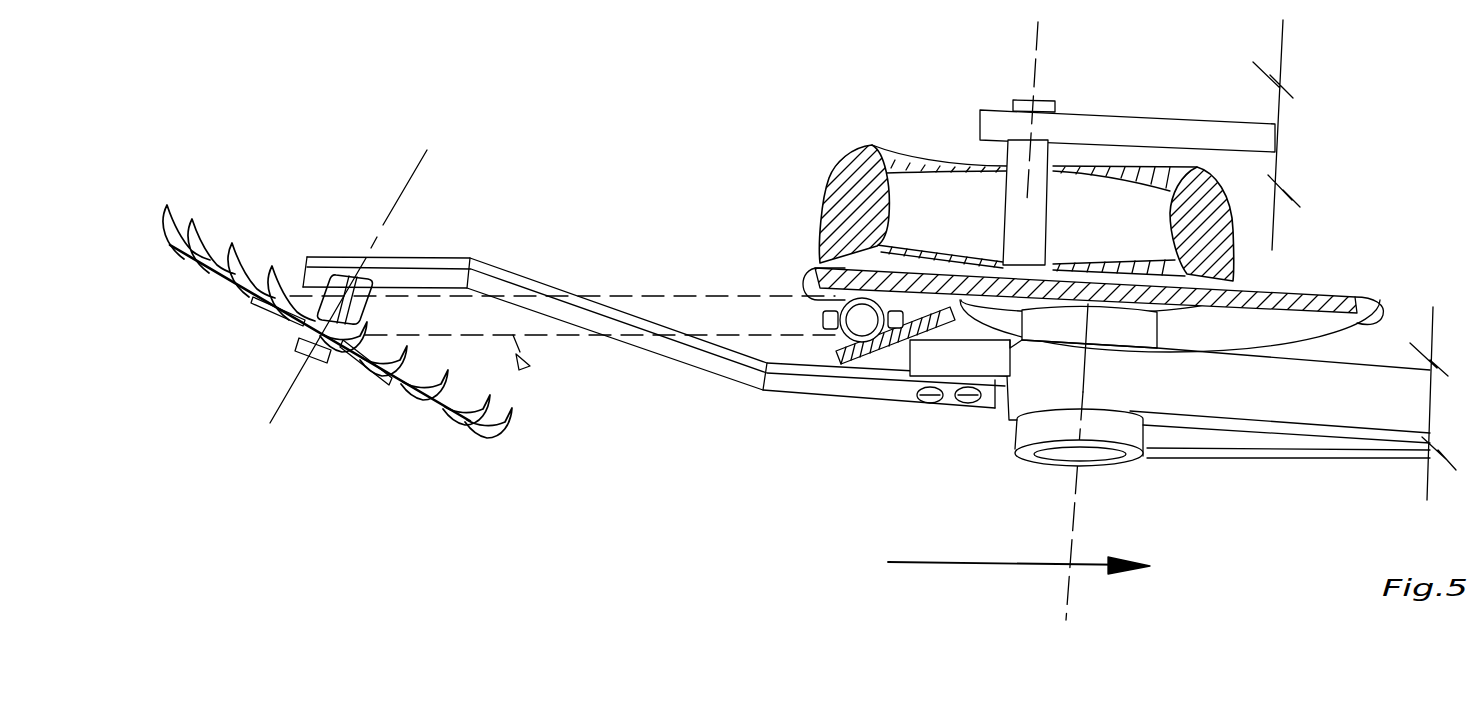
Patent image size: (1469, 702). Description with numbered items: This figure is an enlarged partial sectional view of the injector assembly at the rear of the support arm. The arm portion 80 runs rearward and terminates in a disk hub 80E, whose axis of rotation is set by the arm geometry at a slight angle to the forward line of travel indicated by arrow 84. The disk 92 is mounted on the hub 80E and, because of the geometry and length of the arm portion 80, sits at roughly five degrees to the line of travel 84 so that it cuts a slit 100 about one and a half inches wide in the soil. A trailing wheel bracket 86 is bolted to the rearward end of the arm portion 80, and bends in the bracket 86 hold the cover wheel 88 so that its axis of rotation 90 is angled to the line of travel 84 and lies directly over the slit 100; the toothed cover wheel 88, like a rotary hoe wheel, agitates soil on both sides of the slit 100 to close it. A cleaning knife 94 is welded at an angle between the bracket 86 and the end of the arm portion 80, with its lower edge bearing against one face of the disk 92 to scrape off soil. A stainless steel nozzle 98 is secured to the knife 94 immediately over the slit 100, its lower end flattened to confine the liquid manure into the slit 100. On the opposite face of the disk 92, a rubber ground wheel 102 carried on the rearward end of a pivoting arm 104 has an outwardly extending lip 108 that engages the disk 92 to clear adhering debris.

The arm portion 80 is at (1343, 425).
The disk hub 80E is at (1027, 452).
The line of travel arrow 84 is at (932, 562).
The trailing wheel bracket 86 is at (793, 383).
The cover wheel 88 is at (215, 303).
The axis of rotation 90 is at (397, 200).
The disk 92 is at (1370, 298).
The cleaning knife 94 is at (918, 360).
The nozzle 98 is at (823, 318).
The slit 100 is at (532, 365).
The ground wheel 102 is at (847, 150).
The arm 104 is at (1135, 113).
The outwardly extending lip 108 is at (1237, 288).